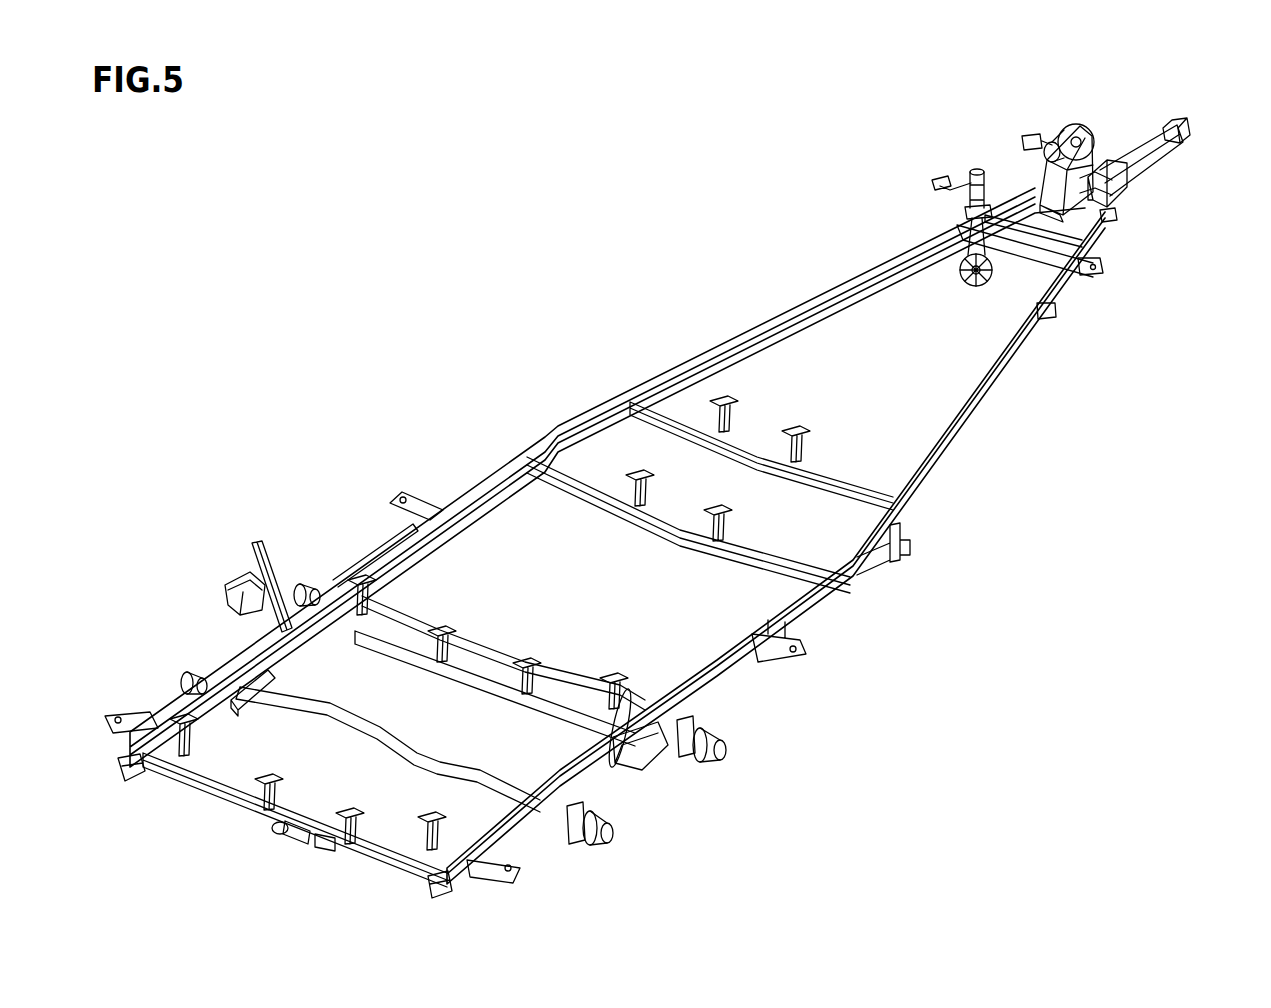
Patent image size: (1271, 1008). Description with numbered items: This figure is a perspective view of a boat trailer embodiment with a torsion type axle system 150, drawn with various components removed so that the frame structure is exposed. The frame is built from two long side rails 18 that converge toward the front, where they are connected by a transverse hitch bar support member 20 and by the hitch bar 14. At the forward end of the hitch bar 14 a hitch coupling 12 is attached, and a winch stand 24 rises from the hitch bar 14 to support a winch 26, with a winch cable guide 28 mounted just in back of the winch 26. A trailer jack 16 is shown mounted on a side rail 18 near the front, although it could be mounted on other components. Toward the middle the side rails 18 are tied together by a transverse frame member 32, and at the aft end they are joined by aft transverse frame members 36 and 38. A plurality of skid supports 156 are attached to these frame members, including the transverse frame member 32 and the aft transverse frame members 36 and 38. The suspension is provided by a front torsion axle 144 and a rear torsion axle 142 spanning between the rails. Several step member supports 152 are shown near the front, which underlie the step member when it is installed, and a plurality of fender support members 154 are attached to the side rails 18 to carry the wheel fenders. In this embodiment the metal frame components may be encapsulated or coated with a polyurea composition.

The hitch coupling 12 is at (1180, 128).
The hitch bar 14 is at (1137, 148).
The trailer jack 16 is at (978, 195).
The side rails 18 is at (857, 281).
The transverse hitch bar support member 20 is at (1013, 250).
The winch stand 24 is at (1047, 170).
The winch 26 is at (1077, 123).
The winch cable guide 28 is at (1035, 140).
The transverse frame member 32 is at (673, 408).
The aft transverse frame member 36 is at (233, 795).
The aft transverse frame member 38 is at (387, 645).
The rear torsion axle 142 is at (400, 752).
The front torsion axle 144 is at (477, 645).
The embodiment of the invention with a torsion type axle system 150 is at (450, 210).
The step member supports 152 is at (1052, 308).
The fender support members 154 is at (128, 720).
The skid supports 156 is at (797, 430).